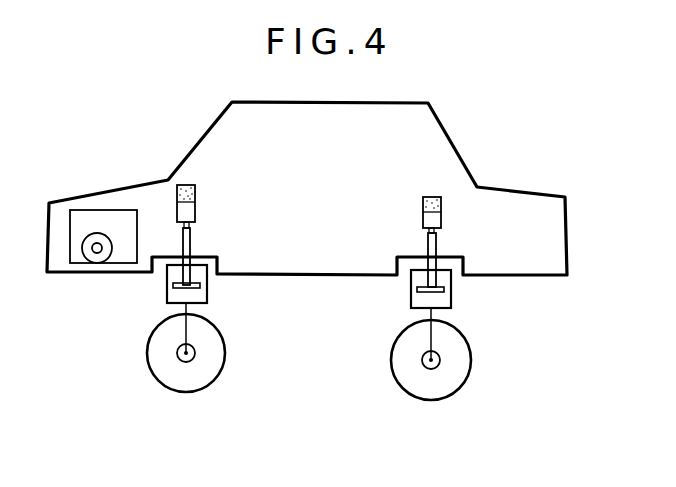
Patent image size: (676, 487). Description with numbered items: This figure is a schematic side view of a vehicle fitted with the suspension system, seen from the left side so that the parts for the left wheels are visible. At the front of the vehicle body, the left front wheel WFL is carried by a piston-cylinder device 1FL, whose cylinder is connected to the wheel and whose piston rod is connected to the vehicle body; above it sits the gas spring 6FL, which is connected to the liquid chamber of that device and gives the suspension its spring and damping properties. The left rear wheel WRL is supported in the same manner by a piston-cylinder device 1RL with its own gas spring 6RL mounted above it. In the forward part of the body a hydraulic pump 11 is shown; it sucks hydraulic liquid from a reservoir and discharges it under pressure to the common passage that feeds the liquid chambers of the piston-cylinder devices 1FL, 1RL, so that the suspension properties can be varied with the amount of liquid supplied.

The hydraulic pump 11 is at (97, 263).
The gas spring 6FL is at (206, 194).
The gas spring 6RL is at (408, 208).
The piston-cylinder device 1FL is at (221, 291).
The piston-cylinder device 1RL is at (464, 297).
The left front wheel WFL is at (187, 377).
The left rear wheel WRL is at (435, 387).